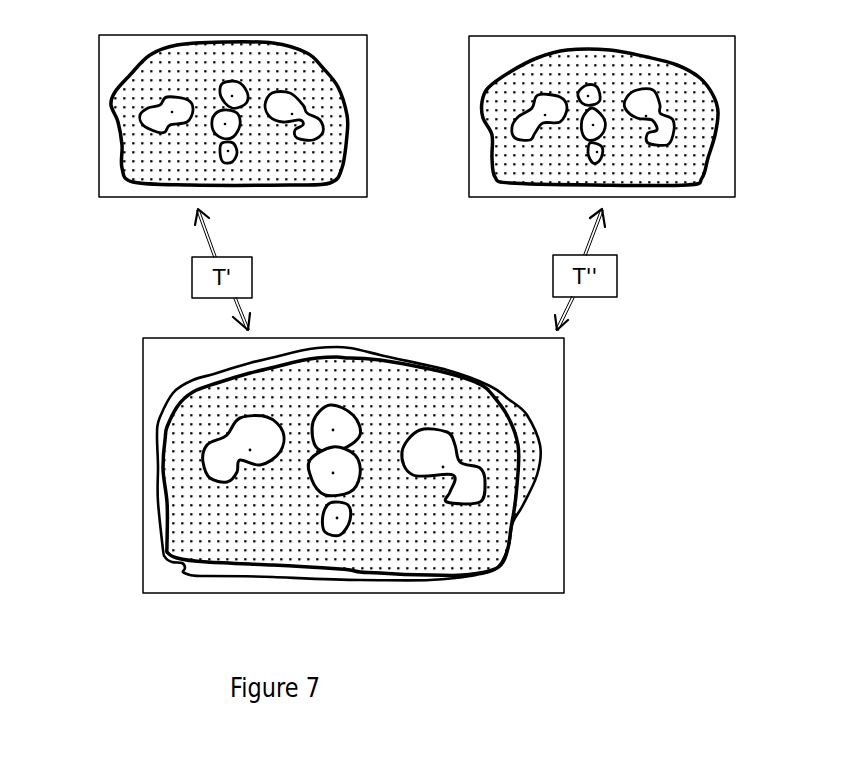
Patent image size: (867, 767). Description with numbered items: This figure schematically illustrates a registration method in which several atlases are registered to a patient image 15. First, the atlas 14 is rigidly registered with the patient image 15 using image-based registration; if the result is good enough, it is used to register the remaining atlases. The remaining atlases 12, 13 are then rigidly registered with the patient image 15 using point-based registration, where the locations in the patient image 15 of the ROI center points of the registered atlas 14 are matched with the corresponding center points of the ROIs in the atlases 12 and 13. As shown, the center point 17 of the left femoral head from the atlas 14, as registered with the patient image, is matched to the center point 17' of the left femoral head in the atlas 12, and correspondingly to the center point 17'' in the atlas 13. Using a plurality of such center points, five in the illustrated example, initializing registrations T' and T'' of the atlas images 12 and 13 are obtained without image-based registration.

The atlas 12 is at (99, 147).
The atlas 13 is at (735, 163).
The atlas 14 is at (530, 413).
The patient image 15 is at (202, 567).
The center point 17 is at (179, 436).
The center point 17' is at (115, 93).
The center point 17'' is at (486, 98).